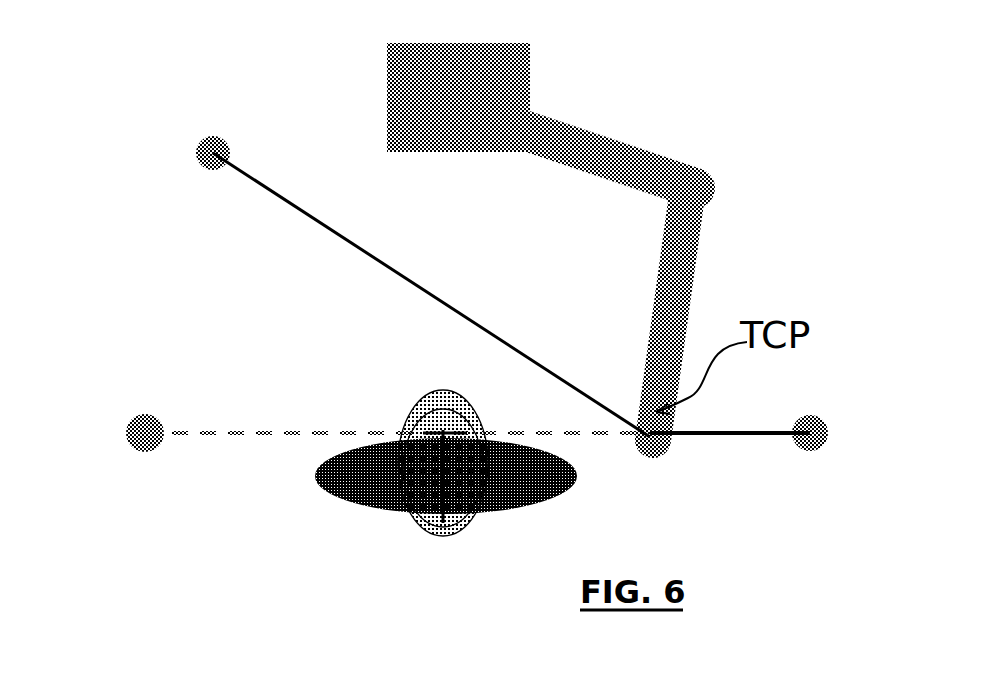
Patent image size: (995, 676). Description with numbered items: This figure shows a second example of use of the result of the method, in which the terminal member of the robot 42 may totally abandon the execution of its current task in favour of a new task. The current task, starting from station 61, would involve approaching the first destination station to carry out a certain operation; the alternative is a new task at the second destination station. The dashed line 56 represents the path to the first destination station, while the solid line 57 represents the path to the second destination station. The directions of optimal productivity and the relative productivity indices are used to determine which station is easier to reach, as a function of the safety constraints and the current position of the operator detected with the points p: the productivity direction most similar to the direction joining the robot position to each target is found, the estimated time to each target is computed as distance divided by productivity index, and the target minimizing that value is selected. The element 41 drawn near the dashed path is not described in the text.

The workpiece 41 is at (446, 485).
The robot 42 is at (518, 241).
The dashed line 56 is at (260, 457).
The solid line 57 is at (300, 225).
The station 61 is at (764, 428).